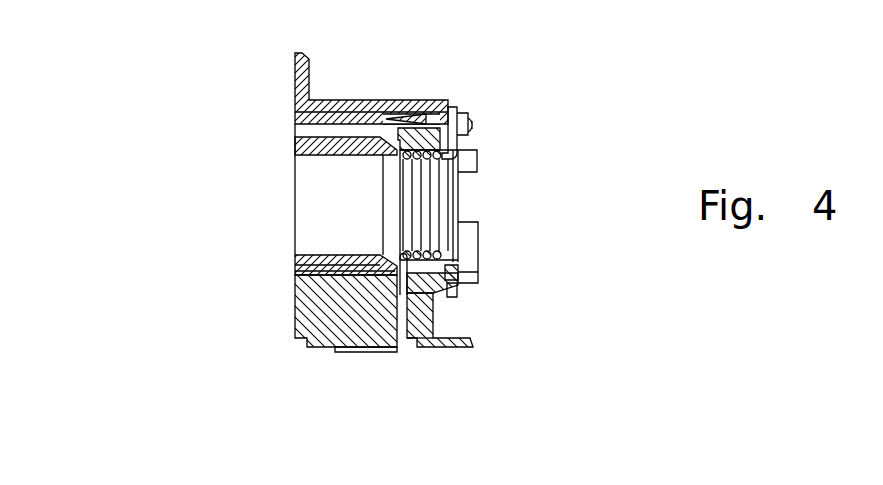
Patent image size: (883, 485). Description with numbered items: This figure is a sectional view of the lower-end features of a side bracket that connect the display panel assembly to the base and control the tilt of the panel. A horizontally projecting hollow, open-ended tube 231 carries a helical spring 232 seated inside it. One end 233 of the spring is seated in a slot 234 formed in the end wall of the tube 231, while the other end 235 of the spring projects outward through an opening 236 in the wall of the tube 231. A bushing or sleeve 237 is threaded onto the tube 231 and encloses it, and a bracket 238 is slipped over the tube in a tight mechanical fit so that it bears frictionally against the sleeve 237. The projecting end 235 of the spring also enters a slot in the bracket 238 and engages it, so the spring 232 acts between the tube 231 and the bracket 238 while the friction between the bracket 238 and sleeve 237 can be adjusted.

The tube 231 is at (317, 157).
The helical spring 232 is at (397, 180).
The end of the spring 233 is at (462, 122).
The slot 234 is at (460, 110).
The end of the spring 235 is at (405, 292).
The opening 236 is at (398, 283).
The sleeve 237 is at (395, 128).
The bracket 238 is at (302, 313).